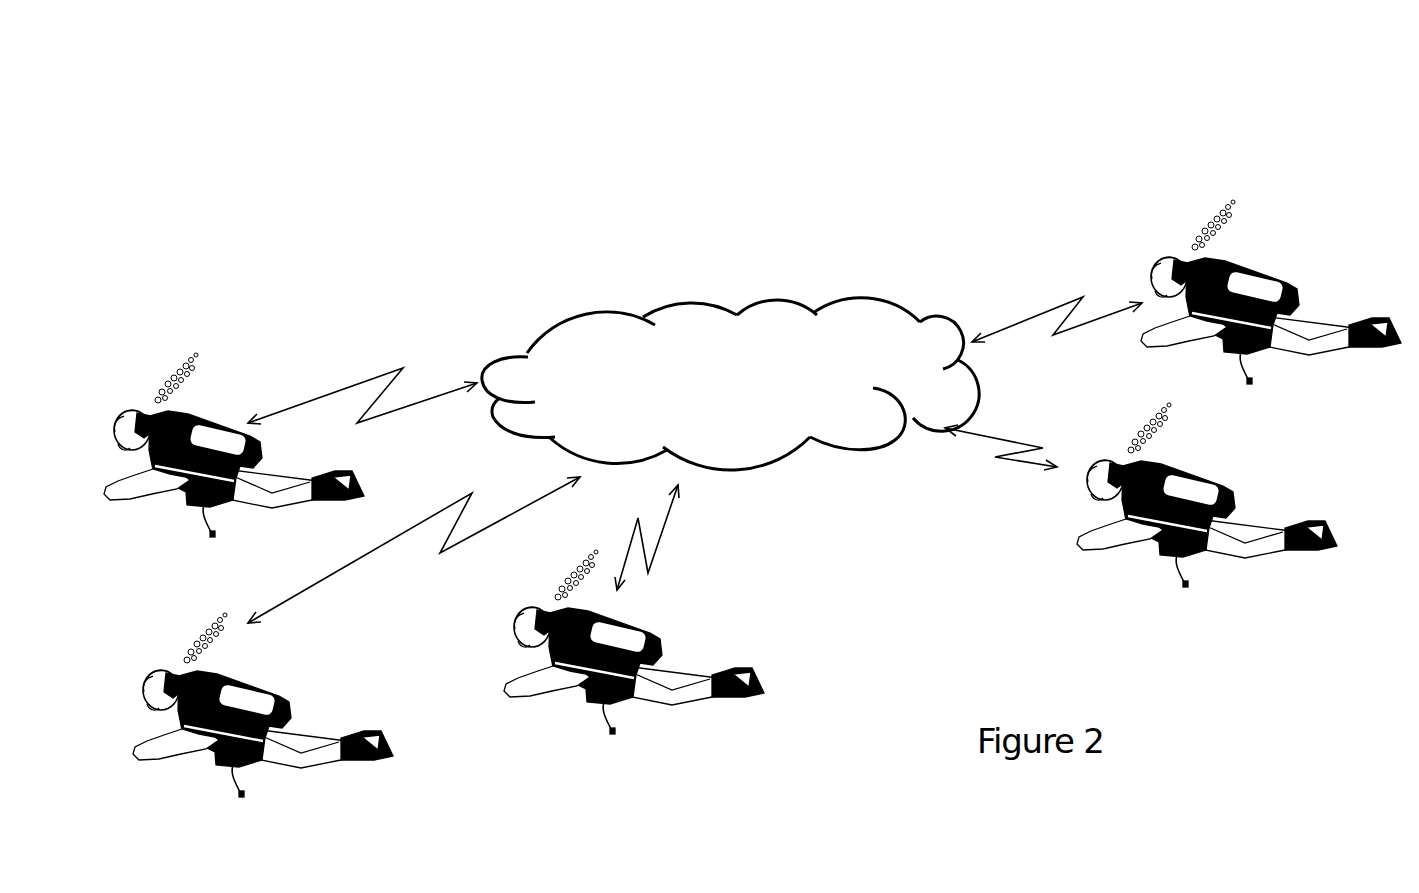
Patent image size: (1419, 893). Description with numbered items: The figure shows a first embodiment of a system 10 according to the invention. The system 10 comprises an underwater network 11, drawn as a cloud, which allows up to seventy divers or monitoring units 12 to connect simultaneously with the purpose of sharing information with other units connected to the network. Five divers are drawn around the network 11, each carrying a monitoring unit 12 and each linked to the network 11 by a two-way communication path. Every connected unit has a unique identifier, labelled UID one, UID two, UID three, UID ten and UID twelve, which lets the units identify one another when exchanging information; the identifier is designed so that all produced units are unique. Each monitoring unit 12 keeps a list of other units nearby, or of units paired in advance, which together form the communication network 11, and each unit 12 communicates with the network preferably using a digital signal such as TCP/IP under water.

The system 10 is at (447, 168).
The underwater network 11 is at (778, 320).
The monitoring unit 12 is at (1108, 503).